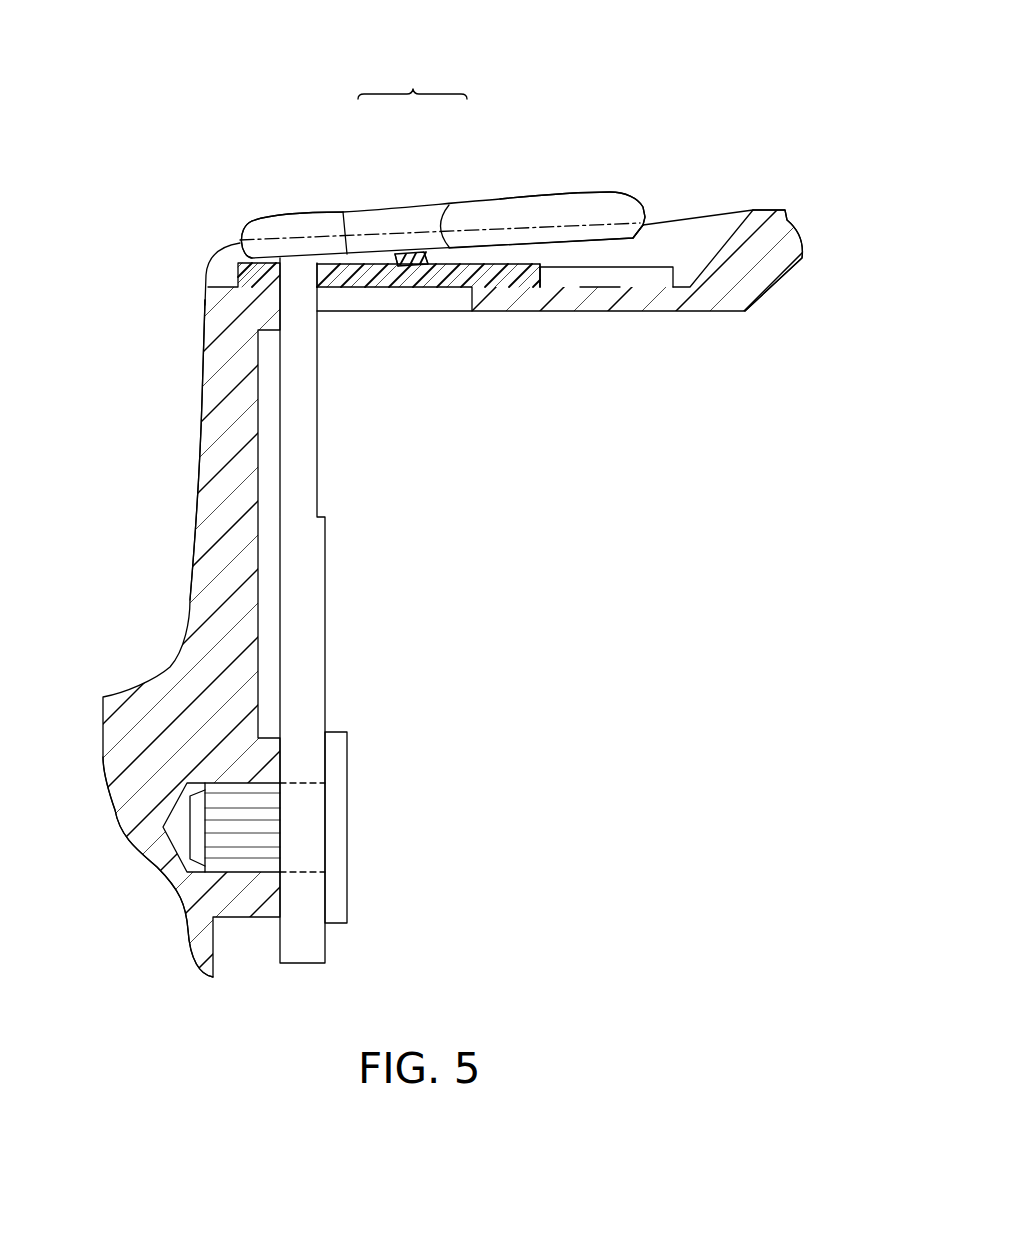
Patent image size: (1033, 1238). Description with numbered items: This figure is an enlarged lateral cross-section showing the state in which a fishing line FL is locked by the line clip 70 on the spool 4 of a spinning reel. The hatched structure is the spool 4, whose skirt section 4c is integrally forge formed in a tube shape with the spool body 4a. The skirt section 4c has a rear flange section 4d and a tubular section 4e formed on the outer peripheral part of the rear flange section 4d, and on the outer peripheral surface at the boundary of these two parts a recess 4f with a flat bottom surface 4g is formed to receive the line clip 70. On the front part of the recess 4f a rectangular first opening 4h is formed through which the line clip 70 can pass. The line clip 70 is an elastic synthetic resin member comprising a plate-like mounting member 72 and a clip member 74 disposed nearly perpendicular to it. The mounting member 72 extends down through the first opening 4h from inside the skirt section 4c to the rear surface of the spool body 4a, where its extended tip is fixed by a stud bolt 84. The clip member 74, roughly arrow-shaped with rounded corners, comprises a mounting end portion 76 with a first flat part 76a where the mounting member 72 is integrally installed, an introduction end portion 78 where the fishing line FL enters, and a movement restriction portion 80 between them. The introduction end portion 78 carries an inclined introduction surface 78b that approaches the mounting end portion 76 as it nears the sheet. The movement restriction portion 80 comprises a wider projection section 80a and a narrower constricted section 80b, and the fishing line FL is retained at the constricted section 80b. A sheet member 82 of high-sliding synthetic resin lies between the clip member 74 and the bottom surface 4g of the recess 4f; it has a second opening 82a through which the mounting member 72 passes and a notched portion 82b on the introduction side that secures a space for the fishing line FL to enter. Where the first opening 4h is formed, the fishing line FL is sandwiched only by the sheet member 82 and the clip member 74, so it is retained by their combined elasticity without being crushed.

The spool 4 is at (198, 287).
The spool body 4a is at (118, 815).
The skirt section 4c is at (684, 200).
The rear flange section 4d is at (223, 467).
The tubular section 4e is at (767, 210).
The recess 4f is at (564, 275).
The bottom surface 4g is at (592, 287).
The first opening 4h is at (472, 298).
The line clip 70 is at (493, 186).
The mounting member 72 is at (307, 610).
The clip member 74 is at (393, 202).
The mounting end portion 76 is at (247, 215).
The first flat part 76a is at (240, 242).
The introduction end portion 78 is at (622, 190).
The introduction surface 78b is at (647, 226).
The movement restriction portion 80 is at (412, 164).
The projection section 80a is at (473, 205).
The constricted section 80b is at (417, 220).
The sheet member 82 is at (489, 262).
The second opening 82a is at (315, 280).
The notched portion 82b is at (542, 278).
The stud bolt 84 is at (342, 780).
The fishing line FL is at (405, 252).